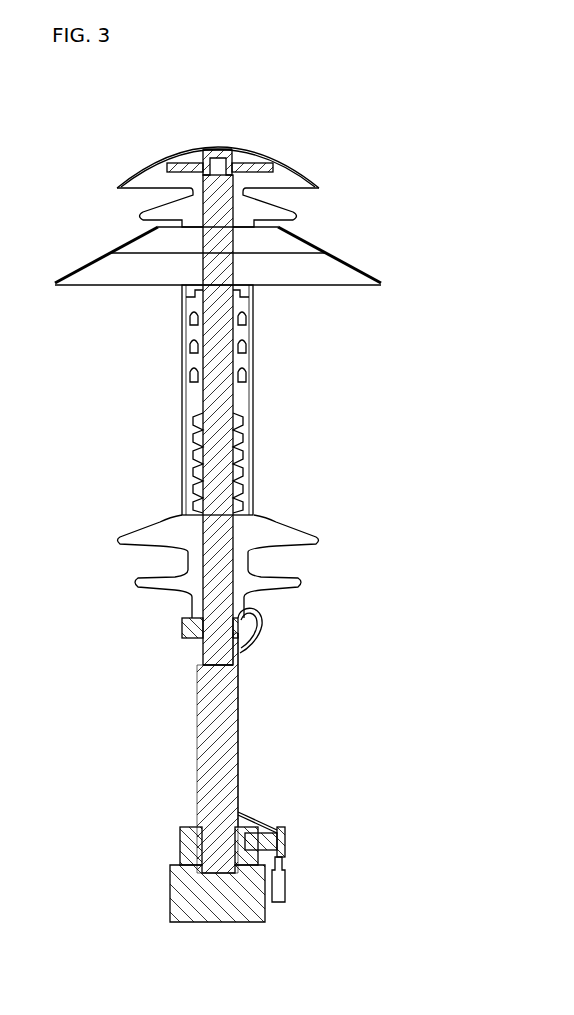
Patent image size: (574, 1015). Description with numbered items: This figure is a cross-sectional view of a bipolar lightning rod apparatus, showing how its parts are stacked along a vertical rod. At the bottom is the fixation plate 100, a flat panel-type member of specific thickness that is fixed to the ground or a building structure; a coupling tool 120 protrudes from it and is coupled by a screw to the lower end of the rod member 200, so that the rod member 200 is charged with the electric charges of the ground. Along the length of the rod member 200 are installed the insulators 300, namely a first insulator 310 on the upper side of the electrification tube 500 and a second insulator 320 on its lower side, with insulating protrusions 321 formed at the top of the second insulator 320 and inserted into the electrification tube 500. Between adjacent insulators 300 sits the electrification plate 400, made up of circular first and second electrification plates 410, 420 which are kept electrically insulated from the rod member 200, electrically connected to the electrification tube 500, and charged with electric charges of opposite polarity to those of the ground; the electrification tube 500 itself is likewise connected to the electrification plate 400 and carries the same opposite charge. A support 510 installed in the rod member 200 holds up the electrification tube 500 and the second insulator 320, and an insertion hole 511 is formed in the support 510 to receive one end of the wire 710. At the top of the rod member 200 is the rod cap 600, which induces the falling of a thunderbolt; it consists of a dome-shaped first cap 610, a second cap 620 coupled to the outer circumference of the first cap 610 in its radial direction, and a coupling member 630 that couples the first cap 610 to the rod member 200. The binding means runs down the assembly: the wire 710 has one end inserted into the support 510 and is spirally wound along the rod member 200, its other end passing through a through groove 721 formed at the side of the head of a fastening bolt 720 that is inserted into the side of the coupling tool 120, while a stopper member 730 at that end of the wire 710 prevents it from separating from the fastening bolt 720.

The fixation plate 100 is at (180, 893).
The coupling tool 120 is at (180, 842).
The rod member 200 is at (202, 398).
The insulators 300 is at (281, 400).
The first insulator 310 is at (280, 183).
The second insulator 320 is at (263, 532).
The insulating protrusions 321 is at (240, 440).
The electrification plate 400 is at (276, 256).
The first electrification plate 410 is at (307, 242).
The second electrification plate 420 is at (370, 270).
The electrification tube 500 is at (252, 393).
The support 510 is at (182, 627).
The insertion hole 511 is at (242, 653).
The rod cap 600 is at (218, 118).
The first cap 610 is at (222, 140).
The second cap 620 is at (300, 173).
The coupling member 630 is at (263, 92).
The wire 710 is at (240, 710).
The fastening bolt 720 is at (285, 842).
The through groove 721 is at (280, 825).
The stopper member 730 is at (278, 890).